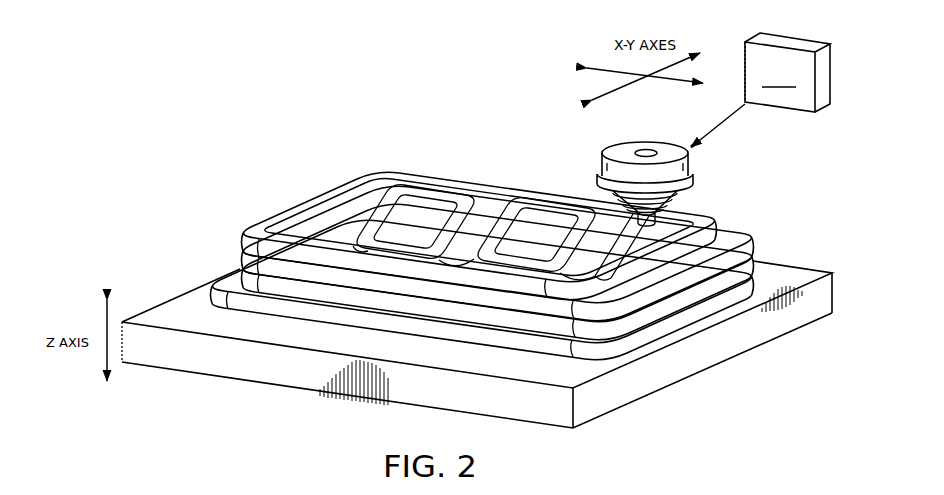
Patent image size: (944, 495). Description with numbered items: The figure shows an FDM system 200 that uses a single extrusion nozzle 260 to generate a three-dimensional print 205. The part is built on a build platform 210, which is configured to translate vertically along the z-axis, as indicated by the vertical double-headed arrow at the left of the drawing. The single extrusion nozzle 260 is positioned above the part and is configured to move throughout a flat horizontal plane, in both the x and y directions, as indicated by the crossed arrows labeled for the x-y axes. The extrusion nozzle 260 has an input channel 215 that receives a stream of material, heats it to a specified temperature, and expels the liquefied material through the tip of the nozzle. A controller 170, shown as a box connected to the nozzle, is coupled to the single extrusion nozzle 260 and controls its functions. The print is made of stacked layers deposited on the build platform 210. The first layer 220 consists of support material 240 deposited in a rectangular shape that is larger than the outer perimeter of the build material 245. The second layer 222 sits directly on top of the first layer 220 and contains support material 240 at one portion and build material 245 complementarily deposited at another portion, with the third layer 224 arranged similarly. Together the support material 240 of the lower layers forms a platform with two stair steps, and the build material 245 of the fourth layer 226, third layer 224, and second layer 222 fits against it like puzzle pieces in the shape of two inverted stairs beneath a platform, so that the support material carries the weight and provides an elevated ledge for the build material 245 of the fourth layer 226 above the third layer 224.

The FDM system 200 is at (507, 225).
The 3D print 205 is at (310, 197).
The build material 245 is at (437, 178).
The single extrusion nozzle 260 is at (614, 161).
The input channel 215 is at (648, 149).
The controller 170 is at (760, 90).
The fourth layer 226 is at (724, 228).
The third layer 224 is at (748, 268).
The second layer 222 is at (692, 287).
The first layer 220 is at (646, 328).
The build platform 210 is at (627, 407).
The support material 240 is at (303, 310).